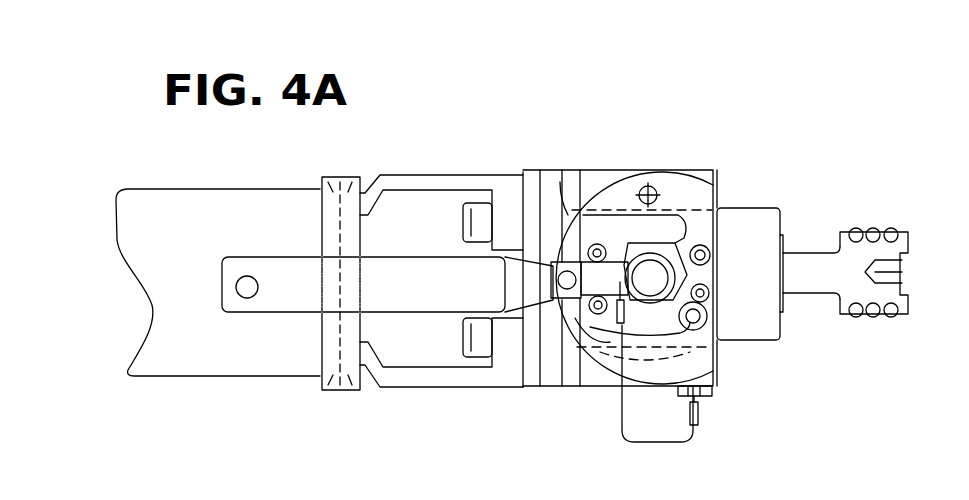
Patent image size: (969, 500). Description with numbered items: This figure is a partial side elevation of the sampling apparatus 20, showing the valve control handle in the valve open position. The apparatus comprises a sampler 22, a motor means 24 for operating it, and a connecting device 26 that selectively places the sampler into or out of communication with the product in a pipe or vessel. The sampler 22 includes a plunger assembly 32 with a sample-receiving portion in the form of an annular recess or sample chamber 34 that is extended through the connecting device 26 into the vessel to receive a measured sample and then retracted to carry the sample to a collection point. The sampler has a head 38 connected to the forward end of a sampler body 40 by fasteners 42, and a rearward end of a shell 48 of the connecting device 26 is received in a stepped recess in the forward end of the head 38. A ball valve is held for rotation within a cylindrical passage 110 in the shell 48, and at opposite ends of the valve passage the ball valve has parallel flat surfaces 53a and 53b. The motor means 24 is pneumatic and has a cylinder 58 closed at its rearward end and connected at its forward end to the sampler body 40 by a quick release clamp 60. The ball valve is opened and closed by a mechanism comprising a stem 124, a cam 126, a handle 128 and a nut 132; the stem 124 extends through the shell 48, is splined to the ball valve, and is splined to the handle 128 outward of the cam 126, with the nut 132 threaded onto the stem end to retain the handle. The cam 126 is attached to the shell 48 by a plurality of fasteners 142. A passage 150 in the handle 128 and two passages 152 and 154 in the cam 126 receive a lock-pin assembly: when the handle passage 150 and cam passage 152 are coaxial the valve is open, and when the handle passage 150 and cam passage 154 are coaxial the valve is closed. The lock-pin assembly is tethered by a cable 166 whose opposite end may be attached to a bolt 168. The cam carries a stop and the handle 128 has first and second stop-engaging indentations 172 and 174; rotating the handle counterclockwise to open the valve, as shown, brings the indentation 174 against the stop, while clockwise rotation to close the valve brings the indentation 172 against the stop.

The drive assembly 20 is at (541, 22).
The sampler 22 is at (458, 112).
The motor means 24 is at (80, 123).
The connecting device 26 is at (645, 100).
The plunger assembly 32 is at (835, 285).
The sample chamber 34 is at (823, 240).
The head 38 is at (540, 170).
The sampler body 40 is at (403, 182).
The fasteners 42 is at (462, 220).
The shell 48 is at (700, 245).
The flat surface 53a is at (585, 250).
The flat surface 53b is at (717, 292).
The cylinder 58 is at (145, 195).
The quick release clamp 60 is at (325, 178).
The cylindrical passage 110 is at (722, 345).
The stem 124 is at (657, 303).
The cam 126 is at (652, 368).
The handle 128 is at (432, 292).
The nut 132 is at (615, 330).
The fasteners 142 is at (590, 248).
The passage 150 is at (562, 300).
The passage 152 is at (567, 280).
The passage 154 is at (645, 186).
The cable 166 is at (683, 440).
The bolt 168 is at (714, 397).
The first stop-engaging indentation 172 is at (690, 262).
The second stop-engaging indentation 174 is at (712, 322).